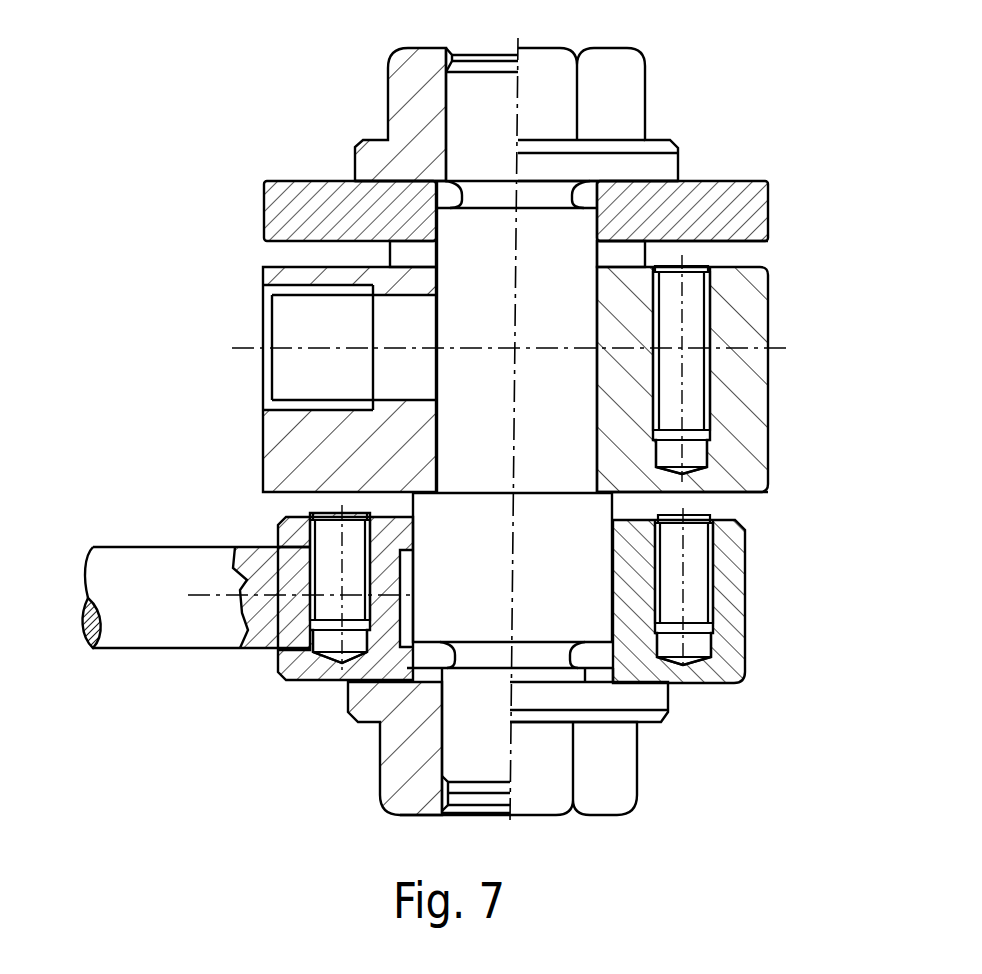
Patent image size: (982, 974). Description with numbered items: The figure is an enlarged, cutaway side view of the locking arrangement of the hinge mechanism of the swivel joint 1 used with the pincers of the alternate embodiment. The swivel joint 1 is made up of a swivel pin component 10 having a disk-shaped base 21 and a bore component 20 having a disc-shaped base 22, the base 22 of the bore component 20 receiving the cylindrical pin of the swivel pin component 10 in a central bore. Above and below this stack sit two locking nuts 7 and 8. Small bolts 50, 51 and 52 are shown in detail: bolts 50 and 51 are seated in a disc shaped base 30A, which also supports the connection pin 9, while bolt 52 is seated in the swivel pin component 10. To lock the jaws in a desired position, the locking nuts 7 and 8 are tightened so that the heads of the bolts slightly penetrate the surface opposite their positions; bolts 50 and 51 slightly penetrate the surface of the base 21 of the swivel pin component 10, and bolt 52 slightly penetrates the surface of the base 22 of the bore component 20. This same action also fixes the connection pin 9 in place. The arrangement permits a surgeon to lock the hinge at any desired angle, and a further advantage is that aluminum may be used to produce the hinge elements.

The swivel joint 1 is at (243, 123).
The locking nut 7 is at (623, 95).
The locking nut 8 is at (612, 777).
The connection pin 9 is at (170, 560).
The swivel pin component 10 is at (777, 397).
The bore component 20 is at (776, 196).
The base 21 is at (767, 487).
The base 22 is at (768, 238).
The disc shaped base 30A is at (733, 633).
The bolt 50 is at (323, 537).
The bolt 51 is at (690, 562).
The bolt 52 is at (693, 307).